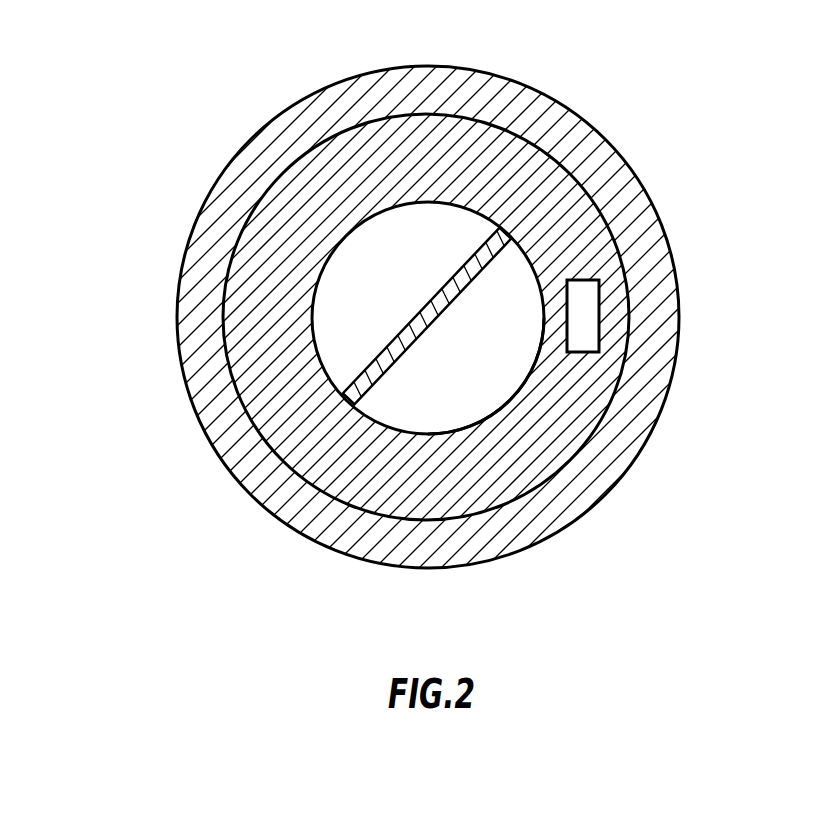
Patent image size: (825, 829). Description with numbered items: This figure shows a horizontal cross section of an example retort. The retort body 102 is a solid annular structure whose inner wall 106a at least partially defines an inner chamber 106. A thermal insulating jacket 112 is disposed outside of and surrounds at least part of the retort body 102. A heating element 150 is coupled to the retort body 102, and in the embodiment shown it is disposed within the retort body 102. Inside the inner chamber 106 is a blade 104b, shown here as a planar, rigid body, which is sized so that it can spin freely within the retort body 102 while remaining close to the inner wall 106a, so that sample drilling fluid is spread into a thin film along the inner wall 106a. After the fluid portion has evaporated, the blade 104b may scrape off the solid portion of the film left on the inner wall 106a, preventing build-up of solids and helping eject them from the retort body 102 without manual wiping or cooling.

The retort body 102 is at (503, 152).
The thermal insulating jacket 112 is at (633, 168).
The inner chamber 106 is at (352, 268).
The inner wall 106a is at (514, 420).
The blade 104b is at (408, 368).
The heating element 150 is at (600, 300).